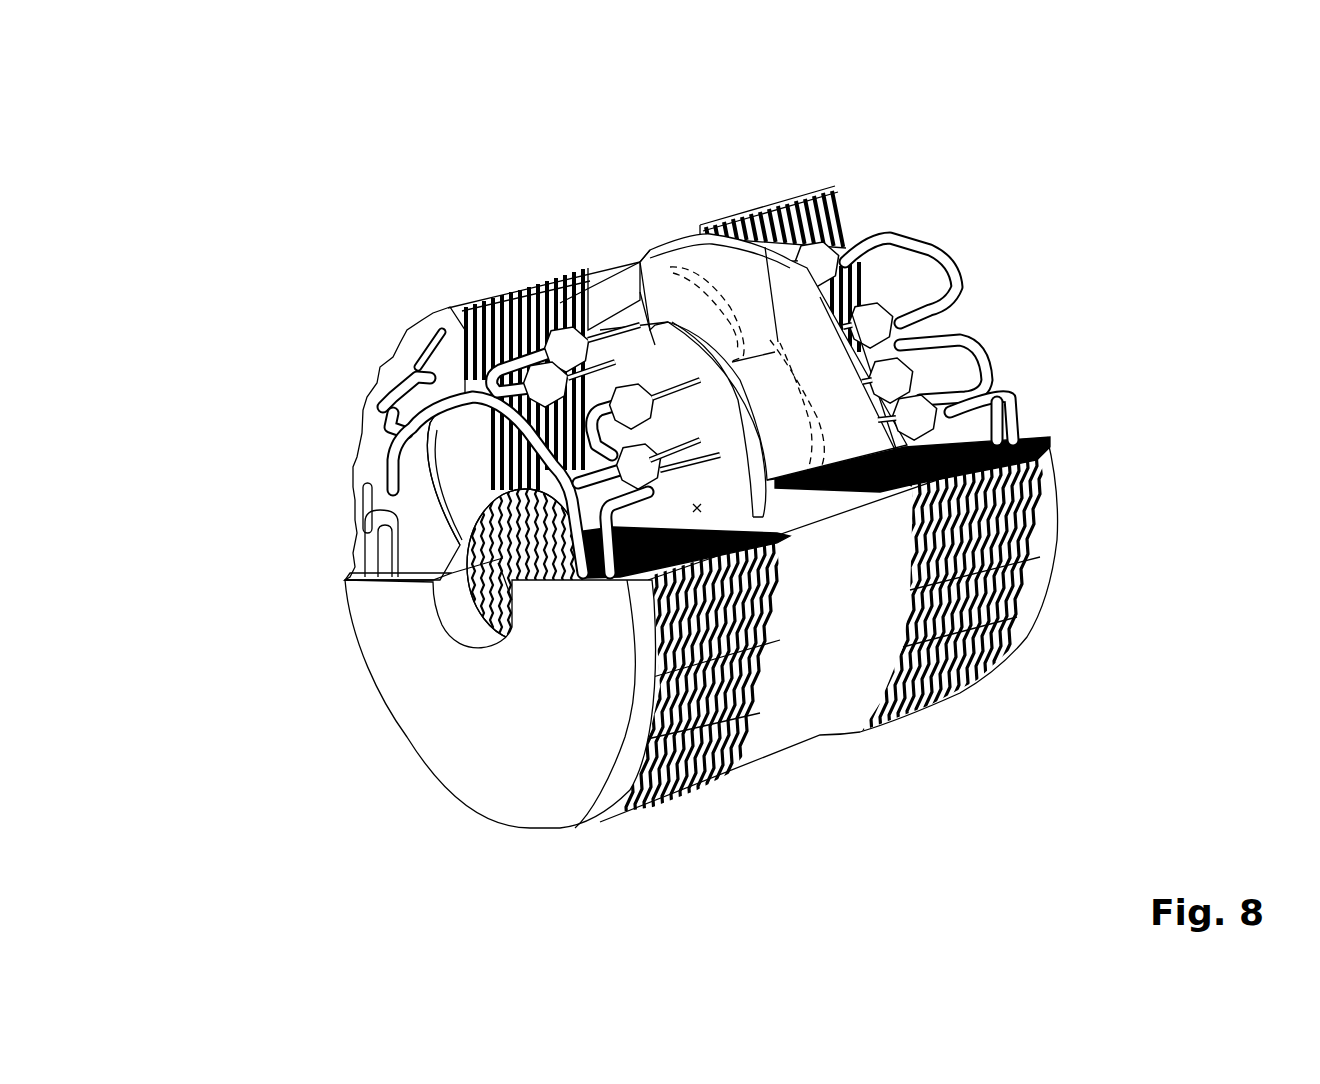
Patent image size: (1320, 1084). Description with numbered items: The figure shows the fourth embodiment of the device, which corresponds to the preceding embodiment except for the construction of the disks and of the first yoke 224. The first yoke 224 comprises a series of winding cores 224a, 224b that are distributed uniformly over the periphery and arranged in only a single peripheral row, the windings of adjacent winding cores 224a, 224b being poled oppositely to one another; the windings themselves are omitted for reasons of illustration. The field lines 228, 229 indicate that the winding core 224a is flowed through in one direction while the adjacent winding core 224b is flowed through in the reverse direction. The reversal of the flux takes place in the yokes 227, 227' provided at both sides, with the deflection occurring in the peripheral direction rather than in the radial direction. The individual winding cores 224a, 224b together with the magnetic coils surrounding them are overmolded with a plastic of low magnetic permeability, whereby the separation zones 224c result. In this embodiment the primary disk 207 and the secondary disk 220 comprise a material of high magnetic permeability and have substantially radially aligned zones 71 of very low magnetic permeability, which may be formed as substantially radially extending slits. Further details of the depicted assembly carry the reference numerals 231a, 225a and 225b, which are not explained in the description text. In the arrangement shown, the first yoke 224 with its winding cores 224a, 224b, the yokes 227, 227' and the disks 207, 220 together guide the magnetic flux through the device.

The secondary disk 220 is at (391, 370).
The zones of very low magnetic permeability 71 is at (428, 347).
The field lines 229 is at (520, 363).
The field lines 228 is at (592, 415).
The end plate 231a is at (602, 300).
The separation zones 224c is at (657, 342).
The winding core 224a is at (688, 312).
The tube 225a is at (732, 305).
The tube 225b is at (797, 358).
The winding core 224b is at (825, 385).
The yoke 227' is at (888, 625).
The primary disk 207 is at (482, 528).
The yoke 227 is at (422, 661).
The first yoke 224 is at (790, 767).